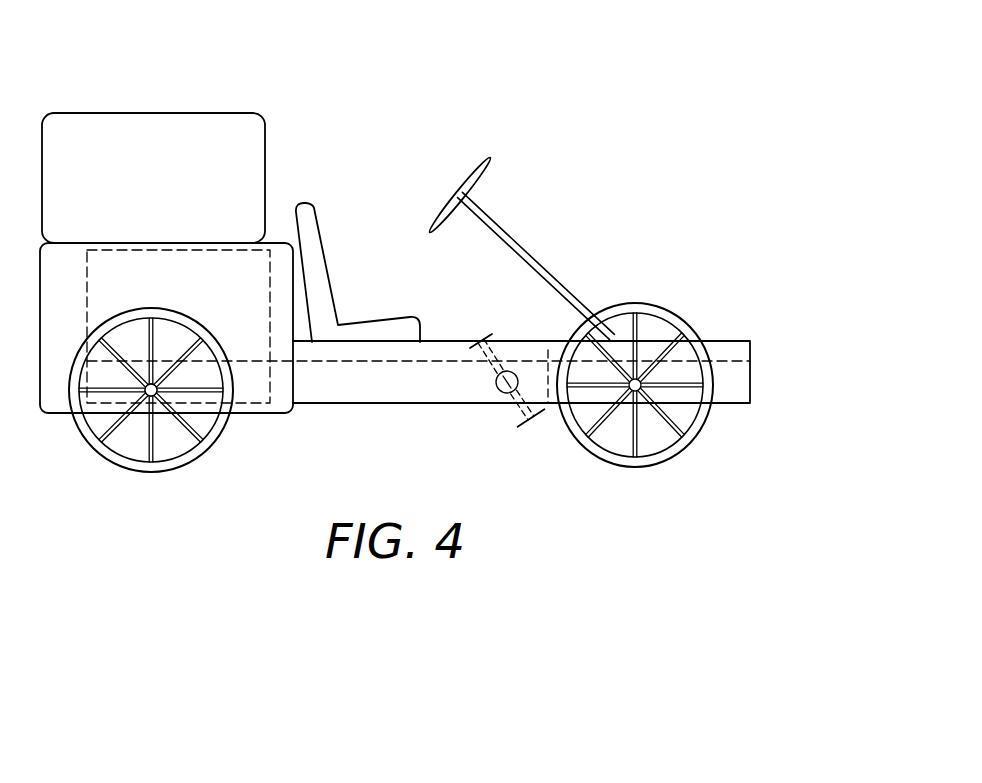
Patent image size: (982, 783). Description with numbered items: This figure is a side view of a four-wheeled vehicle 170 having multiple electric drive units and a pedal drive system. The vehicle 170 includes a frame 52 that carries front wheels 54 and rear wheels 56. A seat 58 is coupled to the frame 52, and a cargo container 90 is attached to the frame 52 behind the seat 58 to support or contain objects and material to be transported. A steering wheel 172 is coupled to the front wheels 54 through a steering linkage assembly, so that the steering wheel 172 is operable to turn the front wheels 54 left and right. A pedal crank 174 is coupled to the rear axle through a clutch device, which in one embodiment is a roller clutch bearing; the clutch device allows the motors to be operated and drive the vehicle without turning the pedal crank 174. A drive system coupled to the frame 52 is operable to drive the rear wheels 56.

The vehicle 170 is at (627, 88).
The steering wheel 172 is at (487, 162).
The pedal crank 174 is at (520, 427).
The seat 58 is at (308, 203).
The front wheels 54 is at (653, 305).
The frame 52 is at (740, 373).
The rear wheels 56 is at (132, 472).
The cargo container 90 is at (100, 226).